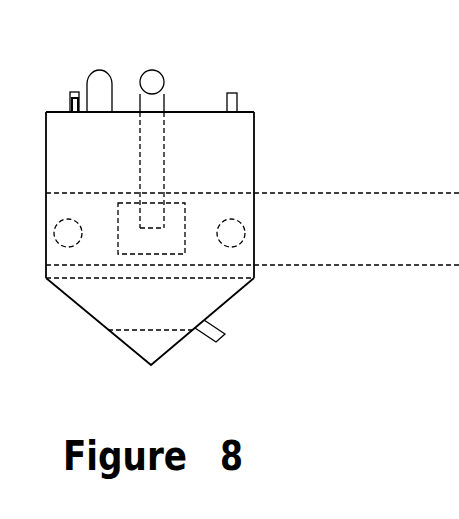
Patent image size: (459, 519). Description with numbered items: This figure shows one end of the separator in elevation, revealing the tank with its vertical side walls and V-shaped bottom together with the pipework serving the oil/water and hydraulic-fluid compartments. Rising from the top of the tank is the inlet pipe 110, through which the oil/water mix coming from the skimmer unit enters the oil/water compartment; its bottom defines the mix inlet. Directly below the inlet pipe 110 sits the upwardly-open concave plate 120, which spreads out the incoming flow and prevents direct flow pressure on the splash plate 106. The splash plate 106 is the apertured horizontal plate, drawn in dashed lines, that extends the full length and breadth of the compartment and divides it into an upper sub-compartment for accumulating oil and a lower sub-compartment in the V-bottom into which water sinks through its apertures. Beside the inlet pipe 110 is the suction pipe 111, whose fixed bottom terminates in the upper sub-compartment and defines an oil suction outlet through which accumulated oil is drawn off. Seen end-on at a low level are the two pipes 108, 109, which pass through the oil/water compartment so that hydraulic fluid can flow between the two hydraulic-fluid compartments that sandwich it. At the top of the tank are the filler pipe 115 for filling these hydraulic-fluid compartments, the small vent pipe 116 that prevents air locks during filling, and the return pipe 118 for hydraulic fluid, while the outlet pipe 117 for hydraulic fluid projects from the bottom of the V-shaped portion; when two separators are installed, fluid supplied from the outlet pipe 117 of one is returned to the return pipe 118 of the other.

The splash plate 106 is at (135, 278).
The pipe 108 is at (228, 230).
The pipe 109 is at (70, 231).
The inlet pipe 110 is at (152, 83).
The suction pipe 111 is at (100, 84).
The filler pipe 115 is at (72, 93).
The vent pipe 116 is at (70, 103).
The outlet pipe 117 is at (226, 327).
The return pipe 118 is at (233, 93).
The plate 120 is at (177, 207).